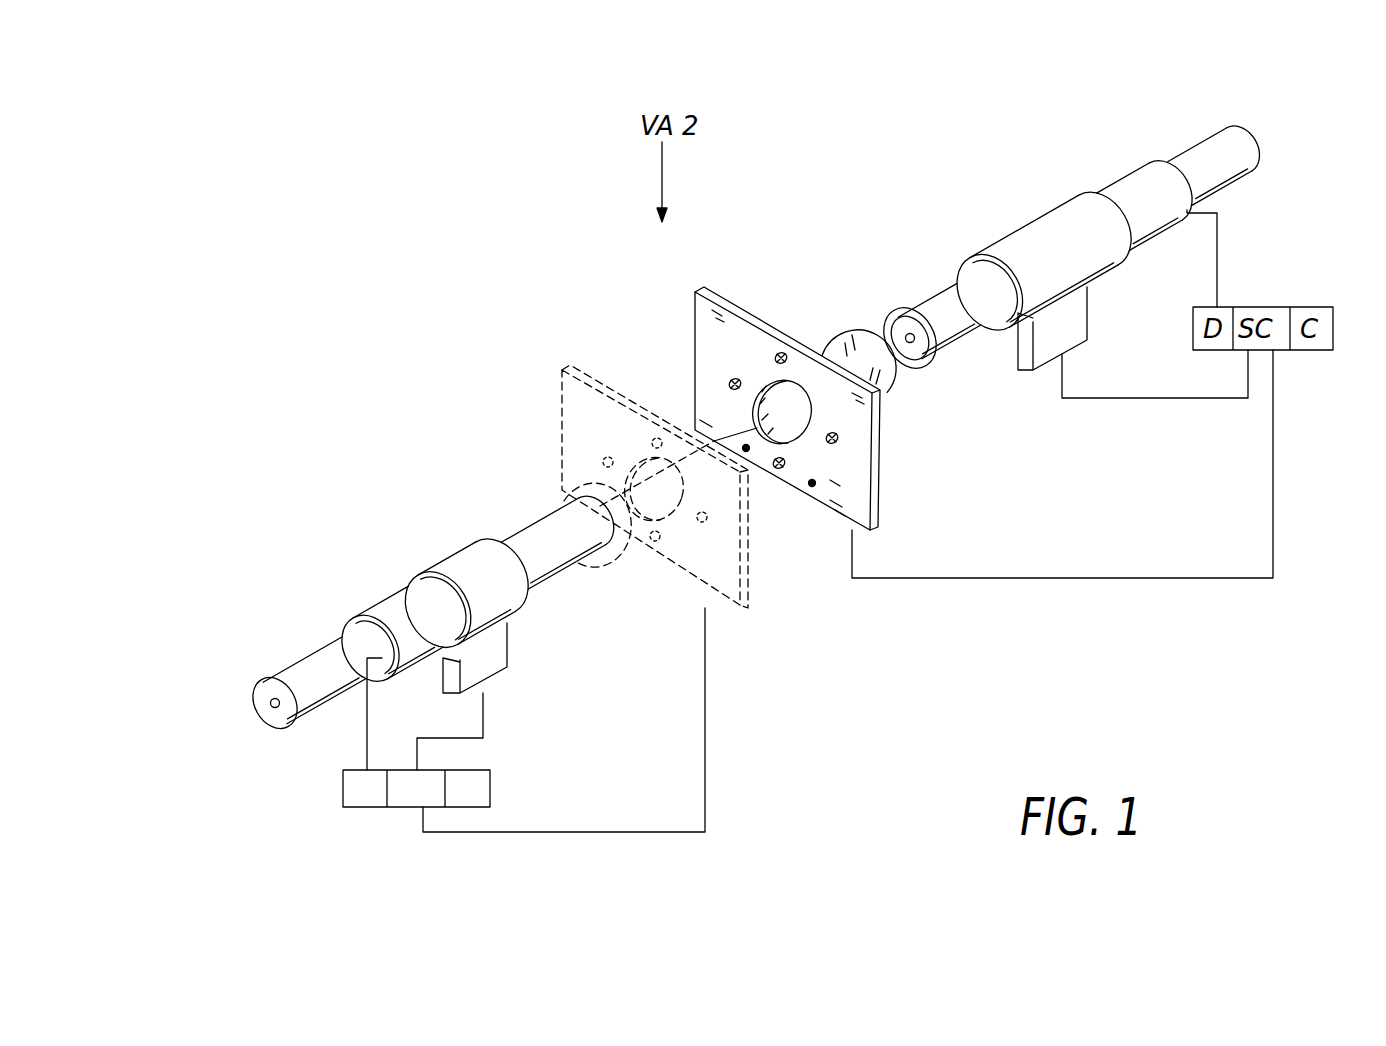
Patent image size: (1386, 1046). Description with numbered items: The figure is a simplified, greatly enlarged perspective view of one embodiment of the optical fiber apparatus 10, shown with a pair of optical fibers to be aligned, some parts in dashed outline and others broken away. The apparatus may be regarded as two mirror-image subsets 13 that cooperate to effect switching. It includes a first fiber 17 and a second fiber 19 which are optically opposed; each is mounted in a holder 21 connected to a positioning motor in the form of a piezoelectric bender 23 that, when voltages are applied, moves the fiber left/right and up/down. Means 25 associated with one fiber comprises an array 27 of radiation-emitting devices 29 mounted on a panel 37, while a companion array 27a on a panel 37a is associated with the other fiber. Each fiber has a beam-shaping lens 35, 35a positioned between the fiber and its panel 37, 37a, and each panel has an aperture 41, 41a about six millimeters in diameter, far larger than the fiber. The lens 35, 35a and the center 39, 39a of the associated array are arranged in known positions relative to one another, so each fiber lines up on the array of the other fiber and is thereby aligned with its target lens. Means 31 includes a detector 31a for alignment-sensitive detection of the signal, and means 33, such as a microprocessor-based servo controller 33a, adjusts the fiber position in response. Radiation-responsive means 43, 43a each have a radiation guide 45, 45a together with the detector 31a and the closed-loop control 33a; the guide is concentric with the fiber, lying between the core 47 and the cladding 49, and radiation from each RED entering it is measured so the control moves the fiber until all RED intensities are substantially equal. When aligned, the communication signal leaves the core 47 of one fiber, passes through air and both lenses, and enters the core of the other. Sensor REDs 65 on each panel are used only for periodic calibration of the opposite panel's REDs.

The optical fiber apparatus 10 is at (880, 678).
The subset 13 is at (897, 200).
The first fiber 17 is at (1112, 186).
The second fiber 19 is at (388, 612).
The holder 21 is at (1020, 228).
The piezoelectric bender 23 is at (1078, 320).
The means for generating an alignment signal 25 is at (678, 333).
The array of radiation-emitting devices 27 is at (860, 432).
The array of radiation-emitting devices 27a is at (724, 562).
The radiation-emitting devices 29 is at (779, 352).
The means for alignment-sensitive detection 31 is at (295, 795).
The detector 31a is at (342, 806).
The means responsive to detection 33 is at (380, 840).
The microprocessor-based servo controller 33a is at (420, 810).
The beam-shaping lens 35 is at (846, 330).
The beam-shaping lens 35a is at (578, 488).
The panel 37 is at (875, 508).
The panel 37a is at (748, 610).
The center of RED array 39 is at (778, 412).
The center of RED array 39a is at (644, 481).
The aperture 41 is at (806, 430).
The aperture 41a is at (638, 458).
The radiation-responsive means 43 is at (1248, 238).
The radiation-responsive means 43a is at (333, 724).
The radiation guide 45 is at (886, 322).
The radiation guide 45a is at (341, 652).
The core 47 is at (908, 333).
The cladding 49 is at (922, 360).
The sensor REDs 65 is at (809, 488).